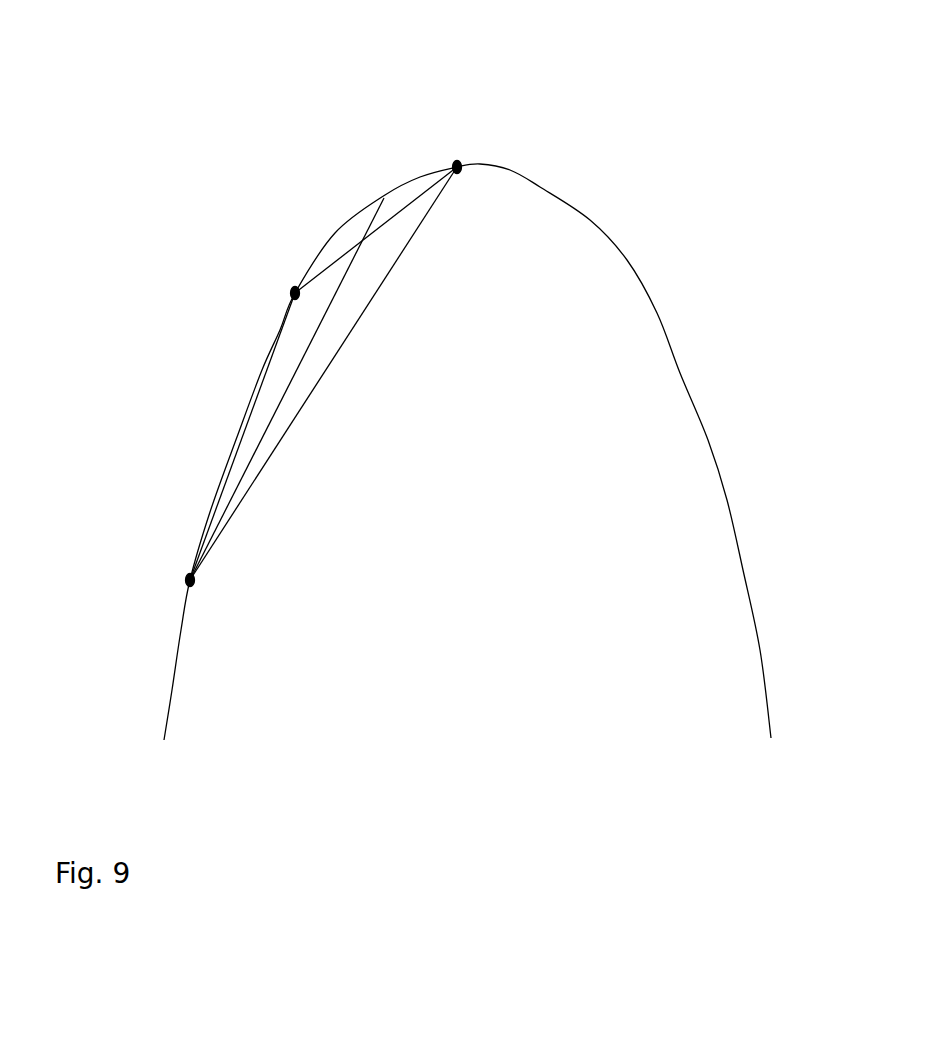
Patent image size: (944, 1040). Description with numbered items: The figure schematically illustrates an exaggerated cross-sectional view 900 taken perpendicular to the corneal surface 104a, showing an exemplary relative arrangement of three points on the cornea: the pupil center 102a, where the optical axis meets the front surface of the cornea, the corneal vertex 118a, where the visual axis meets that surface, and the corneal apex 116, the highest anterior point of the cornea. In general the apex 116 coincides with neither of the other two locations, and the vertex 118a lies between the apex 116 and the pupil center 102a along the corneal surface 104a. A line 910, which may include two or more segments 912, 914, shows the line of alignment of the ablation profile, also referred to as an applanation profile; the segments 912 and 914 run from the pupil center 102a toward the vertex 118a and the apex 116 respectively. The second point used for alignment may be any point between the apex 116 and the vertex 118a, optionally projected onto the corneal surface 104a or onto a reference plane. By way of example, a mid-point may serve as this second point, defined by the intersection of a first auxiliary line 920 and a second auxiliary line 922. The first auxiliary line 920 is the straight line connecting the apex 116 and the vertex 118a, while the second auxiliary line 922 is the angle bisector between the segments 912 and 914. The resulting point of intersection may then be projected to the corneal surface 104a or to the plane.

The cross-sectional view 900 is at (90, 40).
The corneal surface 104a is at (665, 332).
The apex 116 is at (457, 164).
The vertex 118a is at (295, 292).
The pupil center 102a is at (185, 582).
The line of alignment of the ablation profile 910 is at (359, 373).
The segment 912 is at (263, 375).
The segment 914 is at (360, 530).
The first auxiliary line 920 is at (335, 259).
The second auxiliary line 922 is at (255, 448).